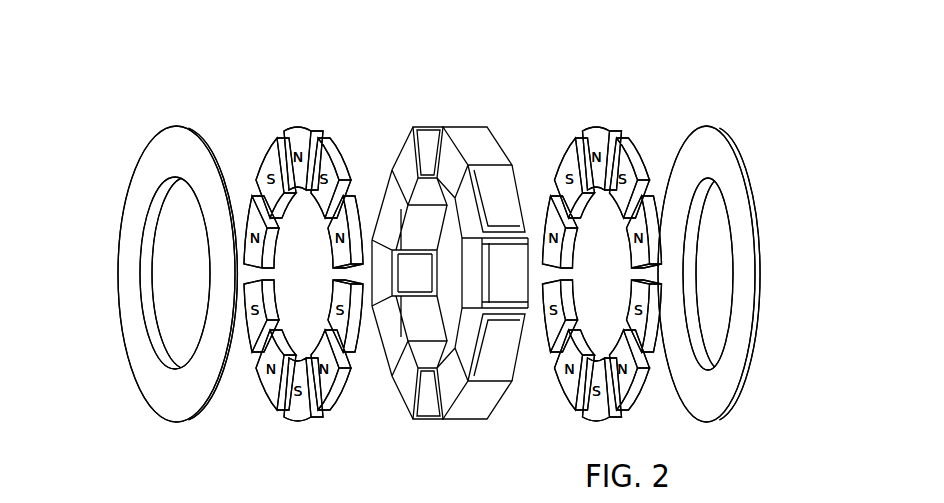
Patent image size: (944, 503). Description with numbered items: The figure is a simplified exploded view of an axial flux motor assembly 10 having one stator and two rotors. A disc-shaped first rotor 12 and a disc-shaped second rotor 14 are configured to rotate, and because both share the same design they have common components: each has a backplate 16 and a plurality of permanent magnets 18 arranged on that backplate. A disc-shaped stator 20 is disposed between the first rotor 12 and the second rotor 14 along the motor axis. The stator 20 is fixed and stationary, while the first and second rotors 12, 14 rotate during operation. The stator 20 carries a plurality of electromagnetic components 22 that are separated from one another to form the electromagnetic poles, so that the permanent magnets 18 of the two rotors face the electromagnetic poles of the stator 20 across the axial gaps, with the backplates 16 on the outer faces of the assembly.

The axial flux motor assembly 10 is at (122, 87).
The first rotor 12 is at (337, 108).
The second rotor 14 is at (760, 108).
The backplate 16 is at (137, 199).
The permanent magnets 18 is at (357, 230).
The stator 20 is at (406, 145).
The electromagnetic components 22 is at (493, 188).